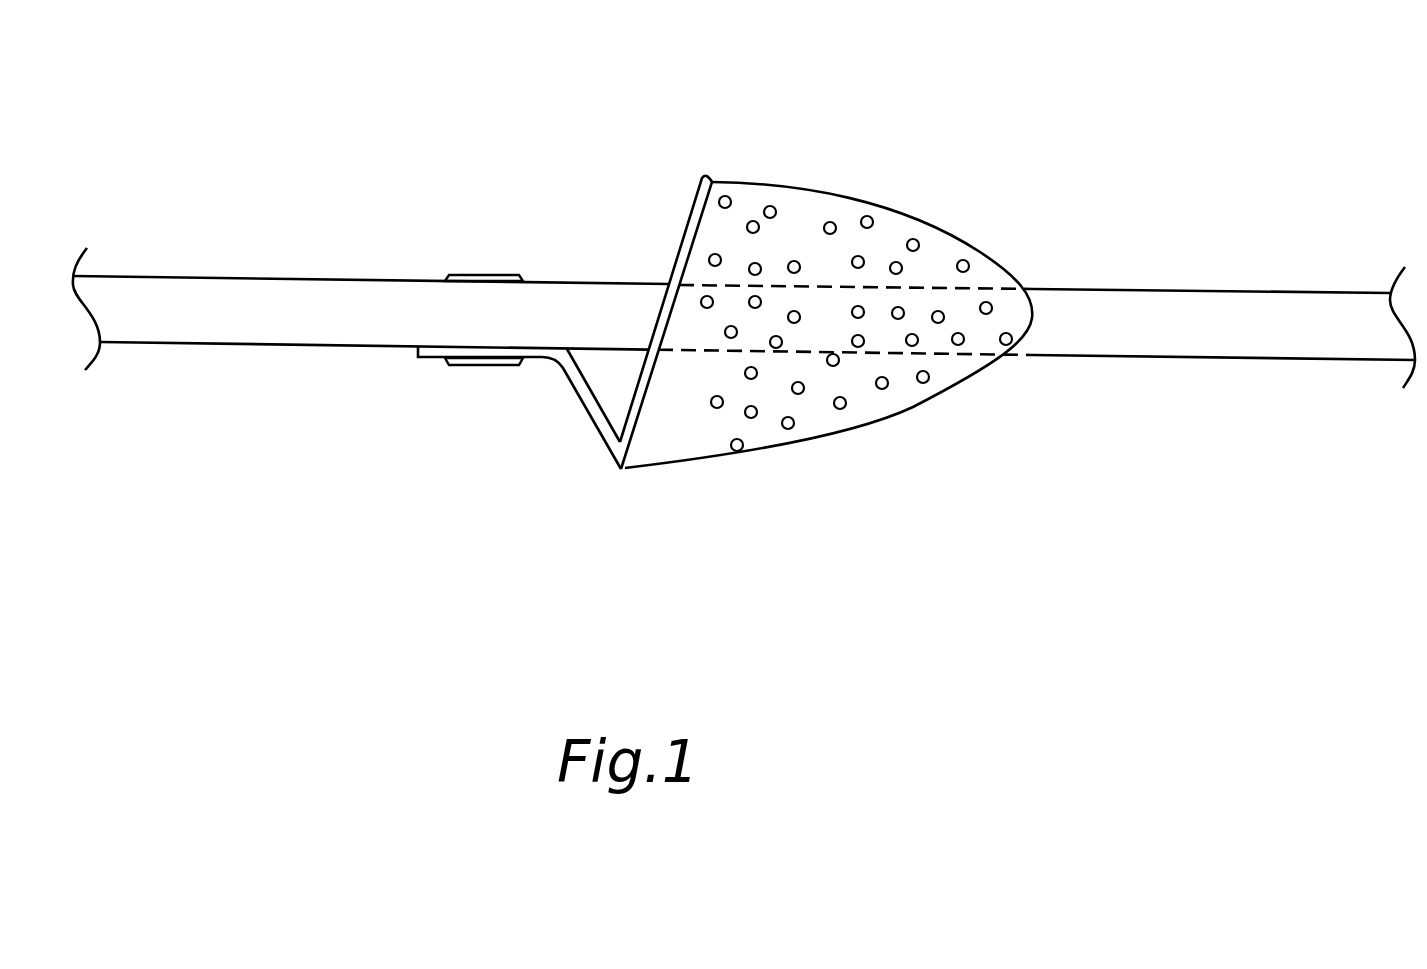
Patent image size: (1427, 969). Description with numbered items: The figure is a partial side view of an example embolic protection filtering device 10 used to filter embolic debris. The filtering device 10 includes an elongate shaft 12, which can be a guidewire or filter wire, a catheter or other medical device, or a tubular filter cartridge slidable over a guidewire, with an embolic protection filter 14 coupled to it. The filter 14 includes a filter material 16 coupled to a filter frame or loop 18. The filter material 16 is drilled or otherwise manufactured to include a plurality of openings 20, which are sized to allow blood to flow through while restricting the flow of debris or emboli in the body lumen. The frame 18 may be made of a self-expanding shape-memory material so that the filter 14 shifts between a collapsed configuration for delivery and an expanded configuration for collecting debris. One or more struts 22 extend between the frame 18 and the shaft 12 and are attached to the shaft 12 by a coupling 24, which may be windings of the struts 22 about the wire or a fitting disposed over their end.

The embolic protection filtering device 10 is at (460, 145).
The elongate shaft 12 is at (228, 277).
The embolic protection filter 14 is at (754, 148).
The filter material 16 is at (947, 250).
The filter frame 18 is at (684, 232).
The openings 20 is at (830, 222).
The struts 22 is at (583, 407).
The coupling 24 is at (458, 275).